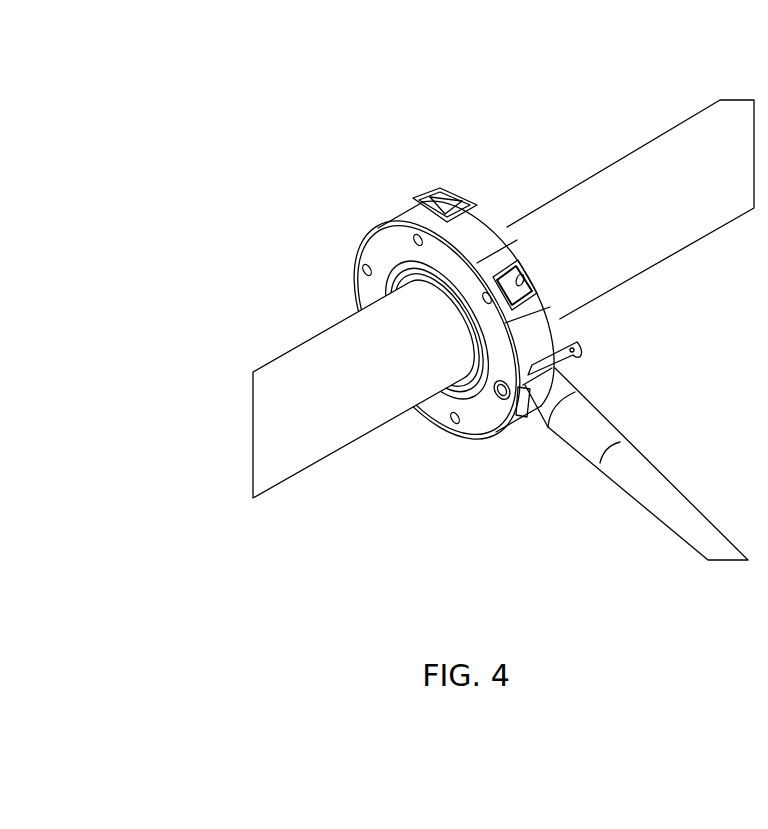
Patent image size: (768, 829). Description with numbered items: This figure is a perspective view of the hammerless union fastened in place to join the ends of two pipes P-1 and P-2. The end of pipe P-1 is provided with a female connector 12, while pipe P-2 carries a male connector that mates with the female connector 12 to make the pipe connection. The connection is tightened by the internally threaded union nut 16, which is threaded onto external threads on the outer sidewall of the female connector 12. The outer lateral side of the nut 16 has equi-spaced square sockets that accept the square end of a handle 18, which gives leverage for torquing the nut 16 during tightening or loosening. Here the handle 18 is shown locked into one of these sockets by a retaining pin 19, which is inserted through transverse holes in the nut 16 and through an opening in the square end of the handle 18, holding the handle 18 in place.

The pipe P-2 is at (572, 188).
The union nut 16 is at (377, 222).
The female connector 12 is at (433, 287).
The pipe P-1 is at (308, 342).
The retaining pin 19 is at (498, 398).
The handle 18 is at (652, 472).